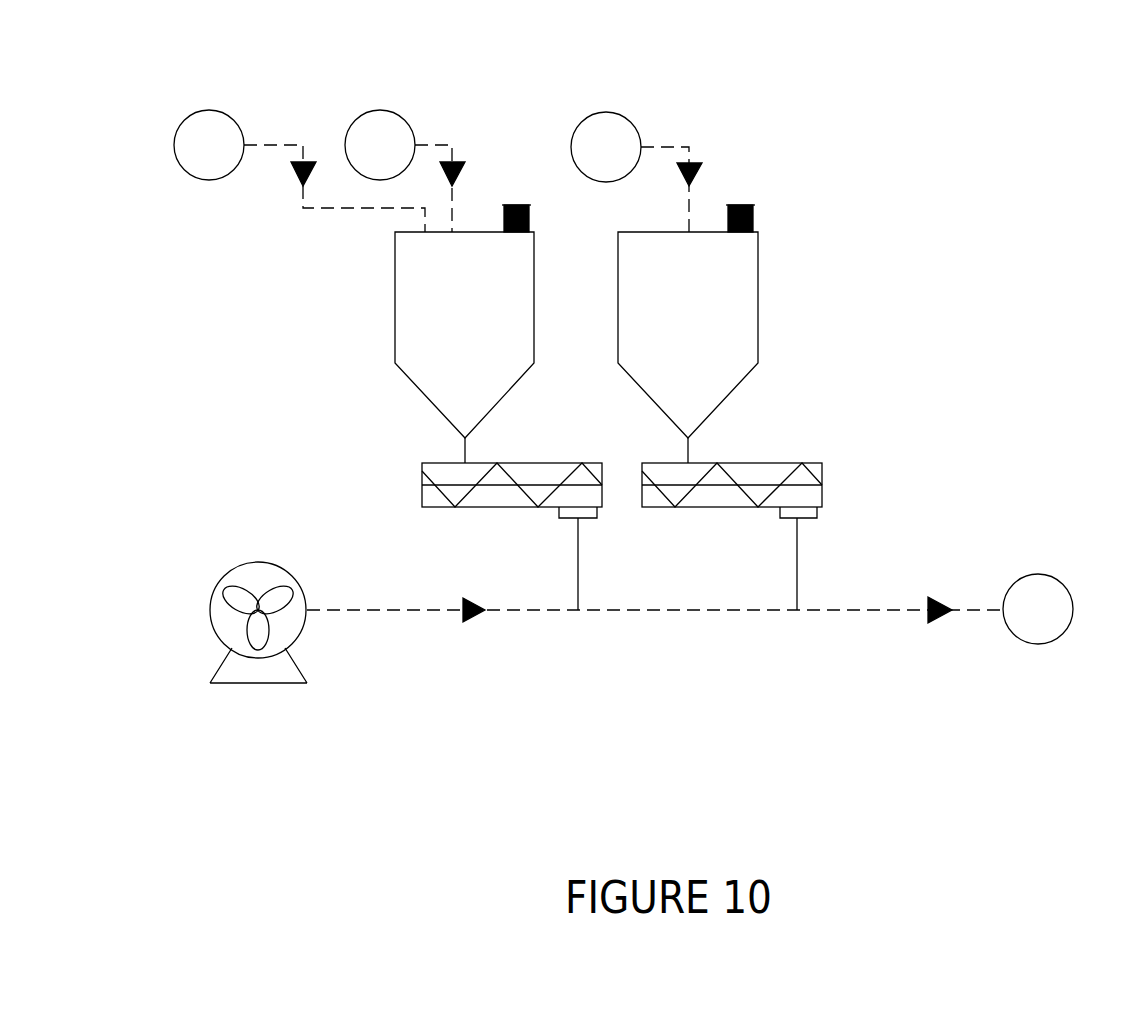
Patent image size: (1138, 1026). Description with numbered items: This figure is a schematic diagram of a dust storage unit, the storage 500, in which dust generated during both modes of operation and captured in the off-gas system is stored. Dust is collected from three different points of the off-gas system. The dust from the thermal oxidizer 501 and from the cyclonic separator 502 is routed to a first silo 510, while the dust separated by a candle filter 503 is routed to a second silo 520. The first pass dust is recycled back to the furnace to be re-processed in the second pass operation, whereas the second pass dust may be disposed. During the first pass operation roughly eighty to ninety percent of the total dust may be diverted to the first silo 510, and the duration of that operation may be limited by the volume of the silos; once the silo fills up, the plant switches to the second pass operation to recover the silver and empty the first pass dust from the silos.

The storage 500 is at (914, 304).
The thermal oxidizer 501 is at (187, 120).
The cyclonic separator 502 is at (356, 120).
The candle filter 503 is at (583, 118).
The first silo 510 is at (395, 303).
The second silo 520 is at (758, 335).